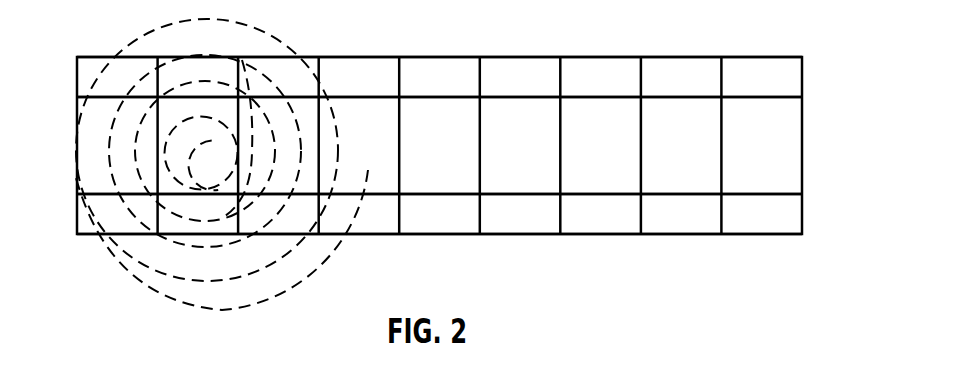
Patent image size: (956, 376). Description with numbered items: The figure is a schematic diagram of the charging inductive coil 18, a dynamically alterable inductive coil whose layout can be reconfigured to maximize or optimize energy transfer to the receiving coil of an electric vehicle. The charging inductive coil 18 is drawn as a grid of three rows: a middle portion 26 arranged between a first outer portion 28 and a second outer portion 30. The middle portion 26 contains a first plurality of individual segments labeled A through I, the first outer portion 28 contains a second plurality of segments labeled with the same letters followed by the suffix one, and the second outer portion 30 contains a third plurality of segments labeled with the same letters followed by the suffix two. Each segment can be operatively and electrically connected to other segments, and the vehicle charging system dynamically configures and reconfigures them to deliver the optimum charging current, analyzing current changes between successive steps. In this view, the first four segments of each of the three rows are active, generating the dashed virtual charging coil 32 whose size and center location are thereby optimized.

The charging inductive coil 18 is at (93, 26).
The first outer portion 28 is at (806, 77).
The middle portion 26 is at (806, 146).
The second outer portion 30 is at (806, 214).
The virtual charging coil 32 is at (187, 241).